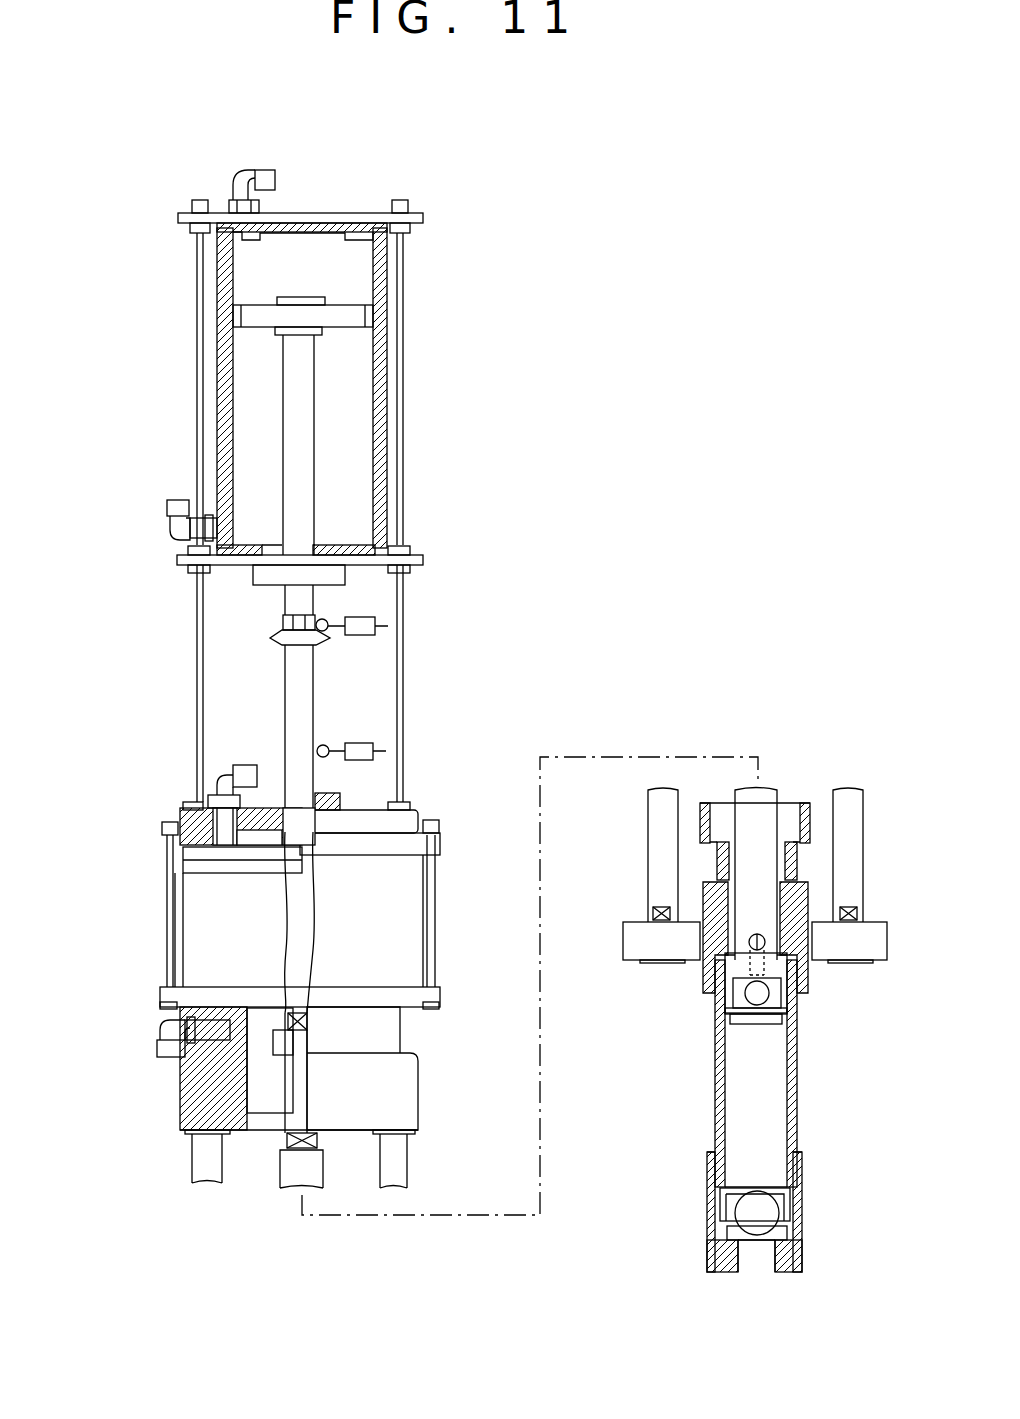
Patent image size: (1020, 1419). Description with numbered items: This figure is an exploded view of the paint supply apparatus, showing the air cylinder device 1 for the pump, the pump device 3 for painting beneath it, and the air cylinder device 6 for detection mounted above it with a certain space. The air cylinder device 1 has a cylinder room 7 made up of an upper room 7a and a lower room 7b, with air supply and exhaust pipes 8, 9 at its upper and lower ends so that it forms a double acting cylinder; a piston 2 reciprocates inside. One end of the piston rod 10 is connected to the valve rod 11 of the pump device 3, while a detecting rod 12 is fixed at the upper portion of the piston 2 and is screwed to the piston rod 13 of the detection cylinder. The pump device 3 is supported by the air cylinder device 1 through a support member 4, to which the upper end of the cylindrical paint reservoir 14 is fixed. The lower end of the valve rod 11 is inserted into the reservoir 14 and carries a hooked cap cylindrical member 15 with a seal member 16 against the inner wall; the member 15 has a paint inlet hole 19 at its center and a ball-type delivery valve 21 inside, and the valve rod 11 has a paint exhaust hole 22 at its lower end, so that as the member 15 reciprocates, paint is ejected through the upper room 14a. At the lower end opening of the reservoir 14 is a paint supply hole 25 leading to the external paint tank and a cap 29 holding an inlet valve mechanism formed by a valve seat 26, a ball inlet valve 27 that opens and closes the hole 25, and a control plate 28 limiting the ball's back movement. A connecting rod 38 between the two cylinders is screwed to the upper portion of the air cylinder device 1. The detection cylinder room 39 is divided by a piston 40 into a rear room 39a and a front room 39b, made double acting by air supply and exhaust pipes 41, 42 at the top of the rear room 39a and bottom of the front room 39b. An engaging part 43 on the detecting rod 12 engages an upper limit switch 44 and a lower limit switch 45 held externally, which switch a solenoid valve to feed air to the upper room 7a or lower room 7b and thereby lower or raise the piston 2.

The air cylinder device for pump 1 is at (447, 888).
The piston 2 is at (295, 858).
The pump device for painting 3 is at (805, 1060).
The support member 4 is at (660, 848).
The air cylinder device for detection 6 is at (425, 399).
The cylinder room 7 is at (190, 950).
The upper room 7a is at (213, 832).
The lower room 7b is at (215, 967).
The air supply and exhaust pipe 8 is at (233, 776).
The air supply and exhaust pipe 9 is at (190, 1032).
The piston rod 10 is at (290, 915).
The valve rod 11 is at (287, 1170).
The detecting rod 12 is at (295, 686).
The piston rod 13 is at (300, 492).
The paint reservoir 14 is at (745, 1080).
The upper room 14a is at (720, 950).
The hooked cap cylindrical member 15 is at (765, 993).
The seal member 16 is at (800, 983).
The paint inlet hole 19 is at (755, 1015).
The delivery valve 21 is at (720, 1000).
The paint exhaust hole 22 is at (770, 935).
The paint supply hole 25 is at (745, 1258).
The valve seat 26 is at (775, 1235).
The inlet valve 27 is at (760, 1212).
The control plate 28 is at (755, 1180).
The cap 29 is at (715, 1250).
The connecting rod 38 is at (205, 612).
The cylinder room 39 is at (237, 381).
The rear room 39a is at (243, 278).
The front room 39b is at (255, 452).
The piston 40 is at (350, 318).
The air supply and exhaust pipe 41 is at (250, 175).
The air supply and exhaust pipe 42 is at (177, 522).
The engaging part 43 is at (390, 627).
The upper limit switch 44 is at (362, 617).
The lower limit switch 45 is at (373, 750).